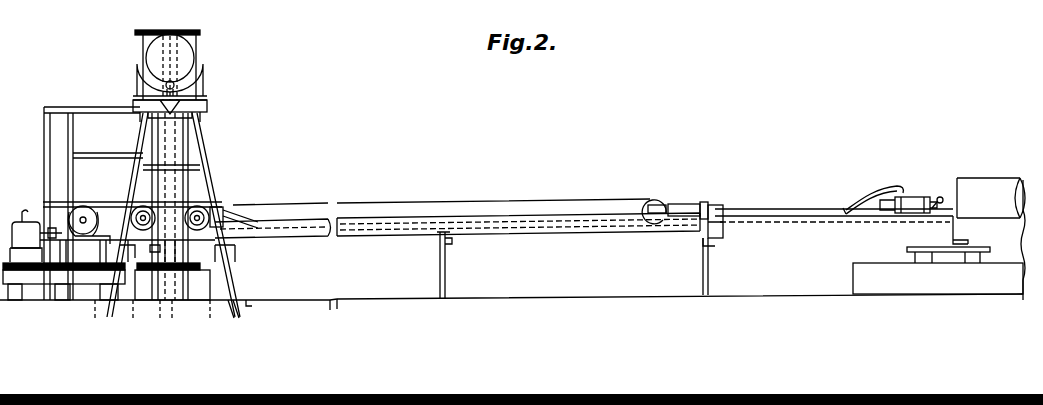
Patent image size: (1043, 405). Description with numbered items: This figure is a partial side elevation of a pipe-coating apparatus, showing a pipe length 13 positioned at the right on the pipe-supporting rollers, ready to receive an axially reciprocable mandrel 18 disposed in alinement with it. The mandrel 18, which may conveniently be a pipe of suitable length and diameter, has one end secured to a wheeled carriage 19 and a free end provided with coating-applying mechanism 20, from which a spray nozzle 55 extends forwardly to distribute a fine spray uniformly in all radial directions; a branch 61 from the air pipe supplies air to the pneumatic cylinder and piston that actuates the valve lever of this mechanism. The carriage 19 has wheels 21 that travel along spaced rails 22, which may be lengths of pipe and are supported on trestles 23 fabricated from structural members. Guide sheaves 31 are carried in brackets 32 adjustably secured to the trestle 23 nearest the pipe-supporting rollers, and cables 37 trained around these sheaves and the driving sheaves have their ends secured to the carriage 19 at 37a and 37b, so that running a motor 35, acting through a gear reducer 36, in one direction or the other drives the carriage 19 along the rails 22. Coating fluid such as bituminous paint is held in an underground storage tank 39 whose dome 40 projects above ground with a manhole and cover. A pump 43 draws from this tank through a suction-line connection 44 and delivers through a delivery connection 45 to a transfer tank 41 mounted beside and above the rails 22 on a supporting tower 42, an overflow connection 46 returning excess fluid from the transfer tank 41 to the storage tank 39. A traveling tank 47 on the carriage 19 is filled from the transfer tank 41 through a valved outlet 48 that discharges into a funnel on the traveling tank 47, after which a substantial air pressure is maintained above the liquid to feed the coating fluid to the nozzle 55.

The pipe length 13 is at (980, 190).
The mandrel 18 is at (523, 216).
The wheeled carriage 19 is at (209, 203).
The coating-applying mechanism 20 is at (912, 197).
The wheels 21 is at (185, 205).
The rails 22 is at (396, 235).
The trestles 23 is at (445, 268).
The guide sheaves 31 is at (659, 199).
The brackets 32 is at (674, 206).
The motor 35 is at (26, 221).
The gear reducer 36 is at (72, 196).
The cables 37 is at (452, 193).
The cable end securement 37a is at (128, 203).
The cable end securement 37b is at (222, 204).
The underground storage tank 39 is at (252, 300).
The dome 40 is at (223, 274).
The transfer tank 41 is at (187, 62).
The supporting tower 42 is at (147, 140).
The pump 43 is at (55, 290).
The suction-line connection 44 is at (164, 266).
The delivery connection 45 is at (151, 51).
The overflow connection 46 is at (187, 49).
The traveling tank 47 is at (184, 121).
The valved outlet 48 is at (161, 90).
The spray nozzle 55 is at (940, 197).
The branch 61 is at (866, 206).